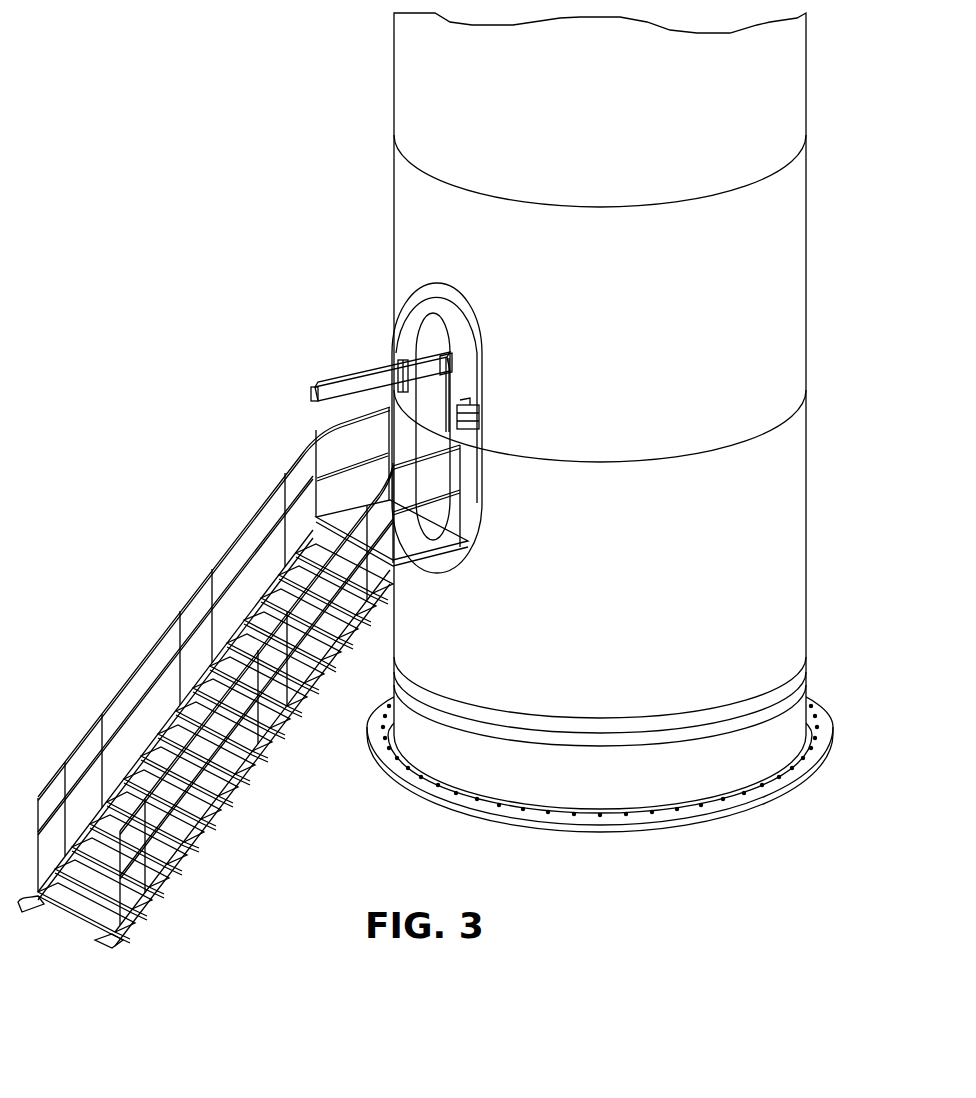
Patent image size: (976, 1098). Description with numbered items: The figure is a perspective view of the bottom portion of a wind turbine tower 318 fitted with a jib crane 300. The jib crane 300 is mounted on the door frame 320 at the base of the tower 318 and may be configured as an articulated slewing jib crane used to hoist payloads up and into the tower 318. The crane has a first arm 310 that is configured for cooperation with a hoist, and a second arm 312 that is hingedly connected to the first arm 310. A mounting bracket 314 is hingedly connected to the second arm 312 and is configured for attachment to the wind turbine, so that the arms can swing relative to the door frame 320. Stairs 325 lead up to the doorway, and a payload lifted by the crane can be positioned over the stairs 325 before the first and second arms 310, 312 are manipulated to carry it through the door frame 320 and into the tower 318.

The jib crane 300 is at (337, 328).
The first arm 310 is at (335, 382).
The second arm 312 is at (443, 368).
The mounting bracket 314 is at (480, 428).
The wind turbine tower 318 is at (775, 211).
The door frame 320 is at (450, 313).
The stairs 325 is at (203, 810).